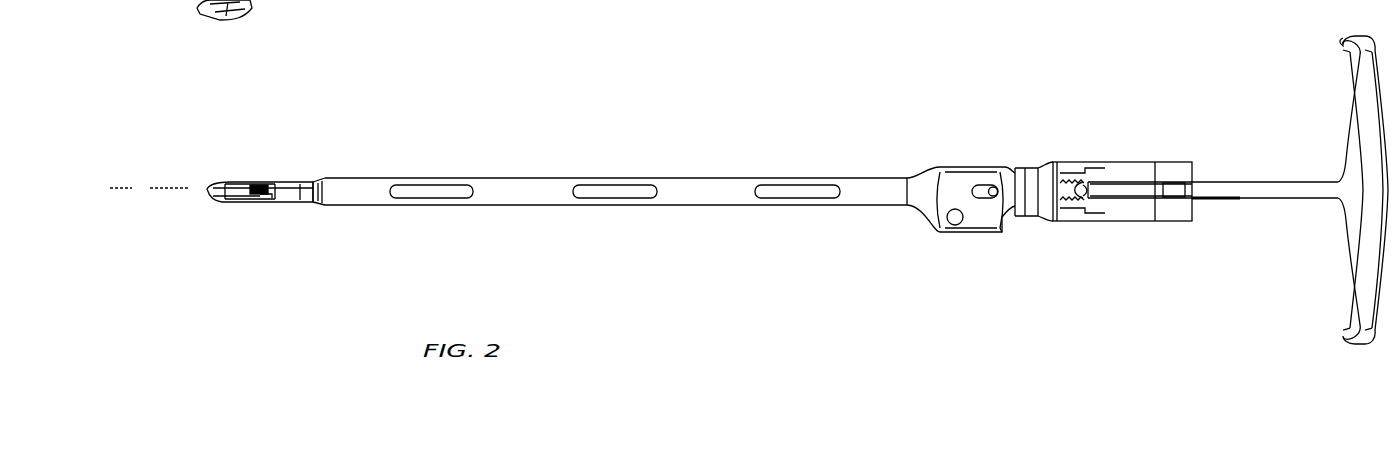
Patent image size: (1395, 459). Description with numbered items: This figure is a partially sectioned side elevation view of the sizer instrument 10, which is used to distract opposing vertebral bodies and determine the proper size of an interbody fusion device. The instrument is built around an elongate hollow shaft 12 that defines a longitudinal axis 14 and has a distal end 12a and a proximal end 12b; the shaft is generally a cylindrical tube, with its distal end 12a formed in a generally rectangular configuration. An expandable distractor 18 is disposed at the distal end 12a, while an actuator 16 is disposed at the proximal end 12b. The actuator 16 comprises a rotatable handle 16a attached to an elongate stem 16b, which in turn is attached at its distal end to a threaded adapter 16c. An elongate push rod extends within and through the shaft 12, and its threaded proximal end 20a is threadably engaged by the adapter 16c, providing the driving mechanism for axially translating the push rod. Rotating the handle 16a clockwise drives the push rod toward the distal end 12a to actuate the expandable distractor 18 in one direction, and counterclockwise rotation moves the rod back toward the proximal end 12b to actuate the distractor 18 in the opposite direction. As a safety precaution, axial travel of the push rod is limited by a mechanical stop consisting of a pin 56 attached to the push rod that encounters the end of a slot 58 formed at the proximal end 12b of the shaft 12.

The sizer instrument 10 is at (780, 97).
The elongate hollow shaft 12 is at (525, 182).
The distal end 12a is at (300, 180).
The proximal end 12b is at (900, 172).
The longitudinal axis 14 is at (160, 186).
The actuator 16 is at (1239, 131).
The rotatable handle 16a is at (1353, 293).
The elongate stem 16b is at (1234, 198).
The threaded adapter 16c is at (1075, 175).
The expandable distractor 18 is at (250, 181).
The proximal end of push rod 20a is at (1067, 215).
The pin 56 is at (995, 185).
The slot 58 is at (982, 200).